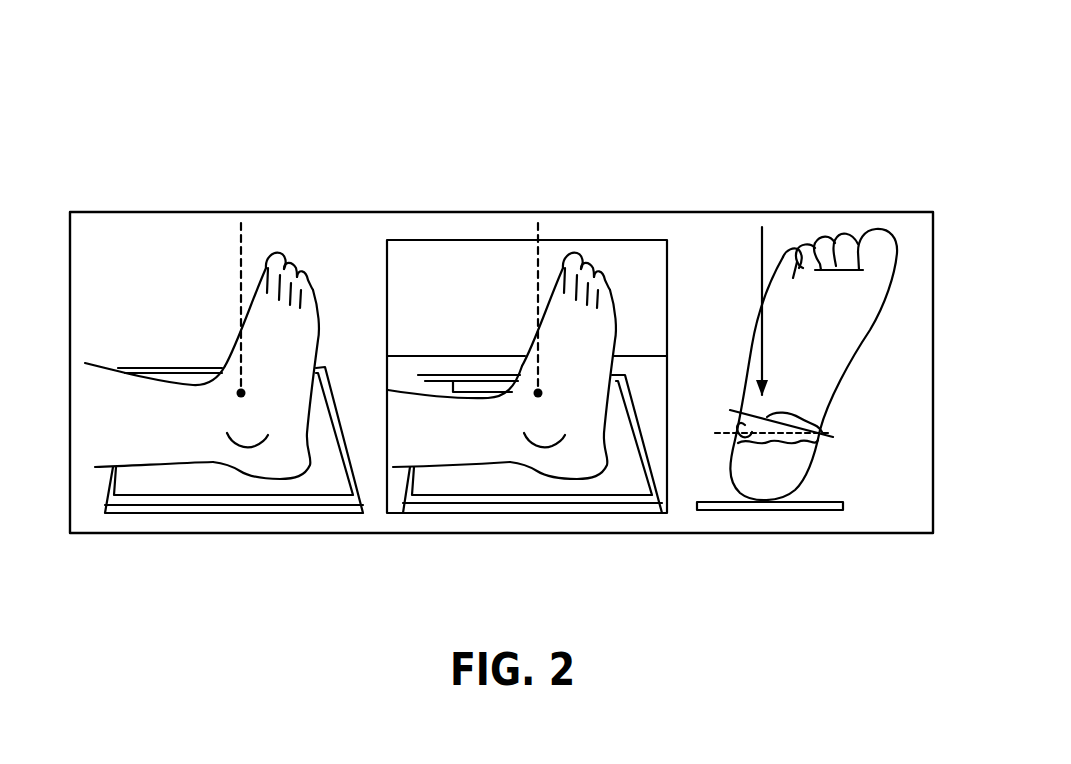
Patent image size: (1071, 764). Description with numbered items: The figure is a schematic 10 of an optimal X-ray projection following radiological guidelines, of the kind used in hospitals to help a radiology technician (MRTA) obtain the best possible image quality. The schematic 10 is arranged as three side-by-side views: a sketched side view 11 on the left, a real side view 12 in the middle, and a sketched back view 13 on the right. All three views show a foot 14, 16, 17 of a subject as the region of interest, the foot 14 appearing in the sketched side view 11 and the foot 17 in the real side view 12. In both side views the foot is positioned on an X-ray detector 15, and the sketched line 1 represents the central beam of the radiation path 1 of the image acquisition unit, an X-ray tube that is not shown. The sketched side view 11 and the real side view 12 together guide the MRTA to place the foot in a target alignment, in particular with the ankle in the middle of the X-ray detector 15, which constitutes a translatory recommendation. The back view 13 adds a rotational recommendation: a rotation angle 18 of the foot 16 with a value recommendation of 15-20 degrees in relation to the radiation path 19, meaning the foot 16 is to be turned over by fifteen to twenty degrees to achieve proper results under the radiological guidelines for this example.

The central beam of radiation path 1 is at (232, 252).
The schematic 10 is at (175, 118).
The sketched side view 11 is at (223, 363).
The real side view 12 is at (527, 353).
The sketched back view 13 is at (795, 359).
The foot 14 is at (223, 422).
The X-ray detector 15 is at (240, 480).
The foot 16 is at (828, 325).
The foot 17 is at (555, 433).
The rotation angle 18 is at (712, 432).
The radiation path 19 is at (758, 278).
The value recommendation of 15 to 20° 15-20 is at (750, 408).